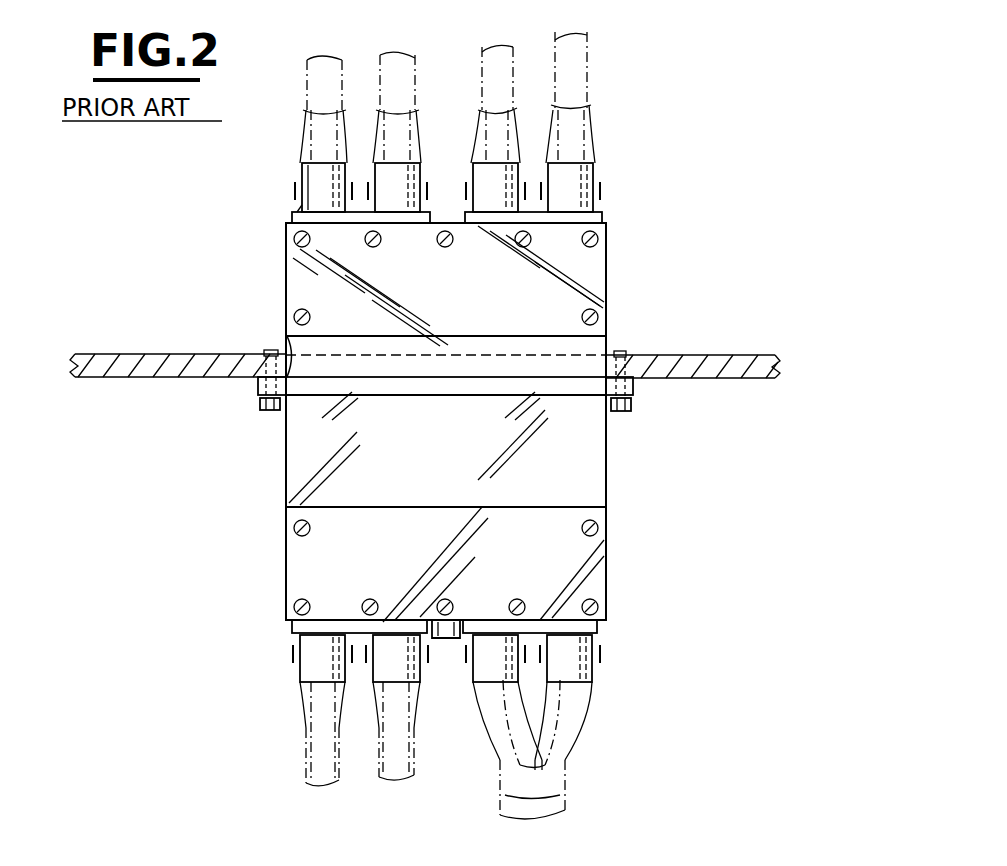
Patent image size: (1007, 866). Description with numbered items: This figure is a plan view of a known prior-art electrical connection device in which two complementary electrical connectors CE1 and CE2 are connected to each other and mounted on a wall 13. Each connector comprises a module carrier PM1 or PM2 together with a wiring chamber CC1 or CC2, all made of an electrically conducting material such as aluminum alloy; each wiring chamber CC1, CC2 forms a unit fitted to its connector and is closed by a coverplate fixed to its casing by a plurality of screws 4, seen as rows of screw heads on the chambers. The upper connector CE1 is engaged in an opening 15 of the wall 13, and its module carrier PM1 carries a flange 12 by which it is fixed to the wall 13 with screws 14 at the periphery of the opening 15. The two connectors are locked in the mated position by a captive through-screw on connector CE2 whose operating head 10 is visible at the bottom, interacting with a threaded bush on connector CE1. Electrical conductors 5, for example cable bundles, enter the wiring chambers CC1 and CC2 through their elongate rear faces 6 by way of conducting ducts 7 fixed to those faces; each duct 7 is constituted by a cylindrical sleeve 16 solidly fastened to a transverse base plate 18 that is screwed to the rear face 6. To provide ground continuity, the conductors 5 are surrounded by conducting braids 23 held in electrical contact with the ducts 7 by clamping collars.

The screws 4 is at (600, 236).
The electrical conductors 5 is at (405, 78).
The elongate rear face 6 is at (443, 222).
The conducting ducts 7 is at (580, 170).
The operating head 10 is at (445, 640).
The flange 12 is at (432, 395).
The wall 13 is at (120, 358).
The screws 14 is at (263, 412).
The opening 15 is at (287, 335).
The cylindrical sleeve 16 is at (325, 168).
The transverse base plate 18 is at (300, 212).
The conducting braids 23 is at (350, 110).
The electrical connector CE1 is at (260, 272).
The electrical connector CE2 is at (258, 489).
The wiring chamber CC1 is at (585, 280).
The wiring chamber CC2 is at (595, 560).
The module carrier PM1 is at (595, 345).
The module carrier PM2 is at (593, 497).